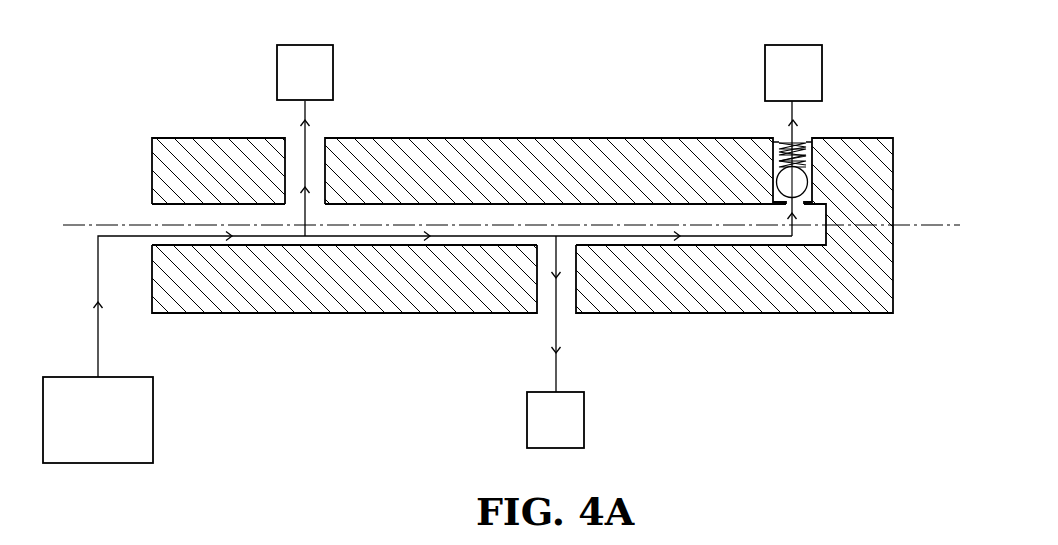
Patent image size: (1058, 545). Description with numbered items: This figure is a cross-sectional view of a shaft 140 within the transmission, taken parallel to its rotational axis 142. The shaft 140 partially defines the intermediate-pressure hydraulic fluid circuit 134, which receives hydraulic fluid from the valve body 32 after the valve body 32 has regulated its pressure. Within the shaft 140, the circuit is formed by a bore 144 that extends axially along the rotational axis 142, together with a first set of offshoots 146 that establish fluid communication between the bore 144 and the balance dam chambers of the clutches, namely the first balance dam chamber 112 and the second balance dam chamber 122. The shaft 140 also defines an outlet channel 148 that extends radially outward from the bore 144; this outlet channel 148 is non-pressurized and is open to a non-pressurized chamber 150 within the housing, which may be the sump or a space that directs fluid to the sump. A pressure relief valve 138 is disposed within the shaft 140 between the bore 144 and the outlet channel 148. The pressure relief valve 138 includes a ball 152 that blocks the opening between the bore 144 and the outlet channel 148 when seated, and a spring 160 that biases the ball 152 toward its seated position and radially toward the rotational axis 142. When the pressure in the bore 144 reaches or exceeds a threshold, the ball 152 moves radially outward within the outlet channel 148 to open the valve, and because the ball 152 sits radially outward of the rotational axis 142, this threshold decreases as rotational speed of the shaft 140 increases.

The shaft 140 is at (182, 54).
The rotational axis 142 is at (955, 225).
The intermediate-pressure hydraulic fluid circuit 134 is at (190, 224).
The bore 144 is at (613, 212).
The first set of offshoots 146 is at (315, 168).
The pressure relief valve 138 is at (842, 163).
The spring 160 is at (773, 162).
The outlet channel 148 is at (811, 150).
The ball 152 is at (777, 182).
The first balance dam chamber 112 is at (305, 72).
The non-pressurized chamber 150 is at (793, 73).
The second balance dam chamber 122 is at (555, 420).
The valve body 32 is at (124, 377).